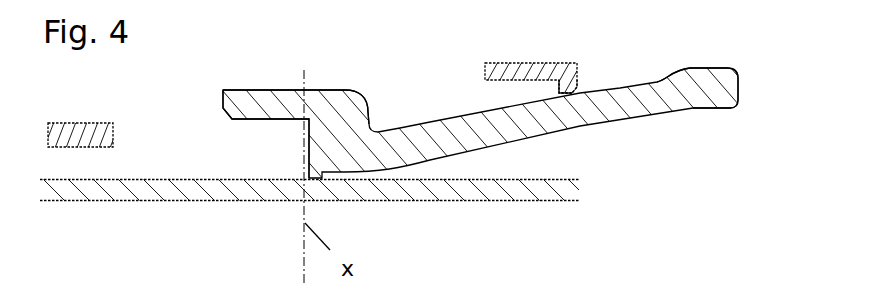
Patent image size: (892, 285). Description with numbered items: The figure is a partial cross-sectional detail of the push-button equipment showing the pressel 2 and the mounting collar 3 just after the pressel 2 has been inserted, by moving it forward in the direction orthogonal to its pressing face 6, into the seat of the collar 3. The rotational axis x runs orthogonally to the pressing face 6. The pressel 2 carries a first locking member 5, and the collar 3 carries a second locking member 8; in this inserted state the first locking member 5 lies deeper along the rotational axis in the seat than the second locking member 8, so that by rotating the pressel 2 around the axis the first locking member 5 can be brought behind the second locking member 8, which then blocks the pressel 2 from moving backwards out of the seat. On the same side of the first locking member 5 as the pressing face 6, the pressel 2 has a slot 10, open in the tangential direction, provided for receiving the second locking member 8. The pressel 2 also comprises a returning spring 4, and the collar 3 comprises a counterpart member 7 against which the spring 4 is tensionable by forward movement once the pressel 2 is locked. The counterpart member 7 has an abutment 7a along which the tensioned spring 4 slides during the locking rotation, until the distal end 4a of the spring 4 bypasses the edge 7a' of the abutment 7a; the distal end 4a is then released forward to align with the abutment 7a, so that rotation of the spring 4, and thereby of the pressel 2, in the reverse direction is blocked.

The pressel 2 is at (628, 227).
The mounting collar 3 is at (617, 57).
The returning spring 4 is at (643, 110).
The distal end 4a is at (717, 75).
The first locking member 5 is at (268, 88).
The pressing face 6 is at (482, 201).
The counterpart member 7 is at (485, 73).
The abutment 7a is at (594, 99).
The edge 7a' is at (506, 94).
The second locking member 8 is at (82, 123).
The slot 10 is at (247, 147).